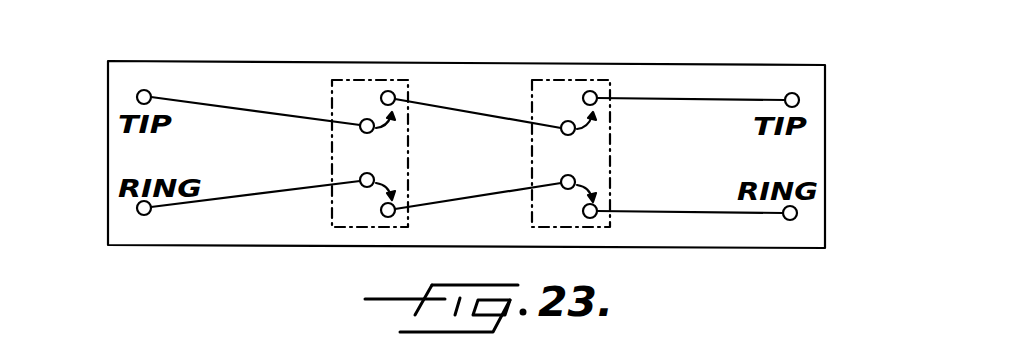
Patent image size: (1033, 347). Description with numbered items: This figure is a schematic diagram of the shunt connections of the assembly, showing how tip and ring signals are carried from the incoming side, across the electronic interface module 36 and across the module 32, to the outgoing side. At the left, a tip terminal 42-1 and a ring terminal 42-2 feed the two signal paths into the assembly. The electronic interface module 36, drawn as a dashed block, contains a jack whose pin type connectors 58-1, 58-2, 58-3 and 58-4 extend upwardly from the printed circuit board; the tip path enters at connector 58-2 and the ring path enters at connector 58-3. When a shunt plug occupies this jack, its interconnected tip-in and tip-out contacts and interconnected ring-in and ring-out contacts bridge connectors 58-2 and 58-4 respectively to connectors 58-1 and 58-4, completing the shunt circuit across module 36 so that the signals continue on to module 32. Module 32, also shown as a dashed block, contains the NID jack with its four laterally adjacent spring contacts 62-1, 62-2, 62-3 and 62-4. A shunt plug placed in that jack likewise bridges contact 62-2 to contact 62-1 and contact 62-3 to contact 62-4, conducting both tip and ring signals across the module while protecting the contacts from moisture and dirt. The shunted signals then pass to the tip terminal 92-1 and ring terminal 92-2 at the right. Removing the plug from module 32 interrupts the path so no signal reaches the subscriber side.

The tip terminal of first jack 42-1 is at (139, 91).
The ring terminal of first jack 42-2 is at (138, 210).
The electronic interface module 36 is at (331, 146).
The module 32 is at (532, 151).
The pin type connector 58-1 is at (389, 91).
The pin type connector 58-2 is at (362, 120).
The pin type connector 58-3 is at (362, 186).
The pin type connector 58-4 is at (388, 217).
The spring contact 62-1 is at (589, 91).
The spring contact 62-2 is at (567, 121).
The spring contact 62-3 is at (574, 176).
The spring contact 62-4 is at (591, 218).
The tip terminal of second jack 92-1 is at (797, 95).
The ring terminal of second jack 92-2 is at (794, 219).